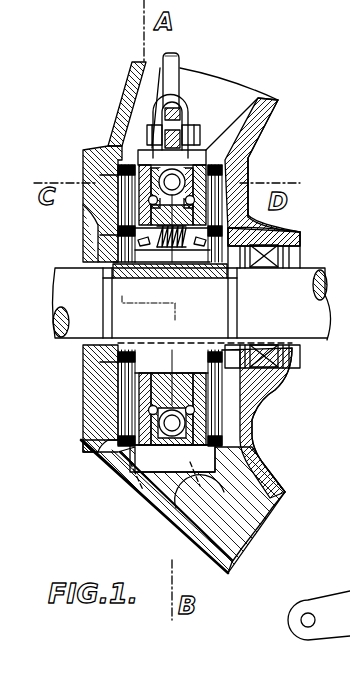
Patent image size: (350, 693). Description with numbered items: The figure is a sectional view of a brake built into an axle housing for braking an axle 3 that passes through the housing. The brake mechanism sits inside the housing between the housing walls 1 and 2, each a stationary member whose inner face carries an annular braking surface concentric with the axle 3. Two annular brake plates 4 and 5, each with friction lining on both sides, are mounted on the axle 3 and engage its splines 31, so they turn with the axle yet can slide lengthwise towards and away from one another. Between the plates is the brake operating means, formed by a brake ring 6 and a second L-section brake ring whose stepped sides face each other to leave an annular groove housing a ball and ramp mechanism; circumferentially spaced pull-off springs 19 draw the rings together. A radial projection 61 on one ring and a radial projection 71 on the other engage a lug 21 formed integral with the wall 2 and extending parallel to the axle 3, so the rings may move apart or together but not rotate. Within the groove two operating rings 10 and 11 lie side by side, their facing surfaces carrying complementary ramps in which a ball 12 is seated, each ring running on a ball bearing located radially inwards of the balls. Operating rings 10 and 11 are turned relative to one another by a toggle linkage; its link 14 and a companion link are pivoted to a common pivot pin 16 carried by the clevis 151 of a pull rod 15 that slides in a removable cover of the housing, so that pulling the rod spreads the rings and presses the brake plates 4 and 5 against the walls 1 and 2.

The housing wall 1 is at (258, 492).
The housing wall 2 is at (152, 520).
The axle 3 is at (93, 300).
The brake plate 4 is at (127, 406).
The brake plate 5 is at (214, 411).
The brake ring 6 is at (136, 427).
The operating ring 10 is at (150, 162).
The operating ring 11 is at (230, 157).
The ball 12 is at (122, 176).
The link 14 is at (319, 597).
The pull rod 15 is at (176, 70).
The pivot pin 16 is at (150, 150).
The pull-off spring 19 is at (262, 236).
The lug 21 is at (160, 505).
The splines 31 is at (158, 276).
The radial projection 61 is at (128, 486).
The radial projection 71 is at (196, 486).
The clevis 151 is at (188, 110).